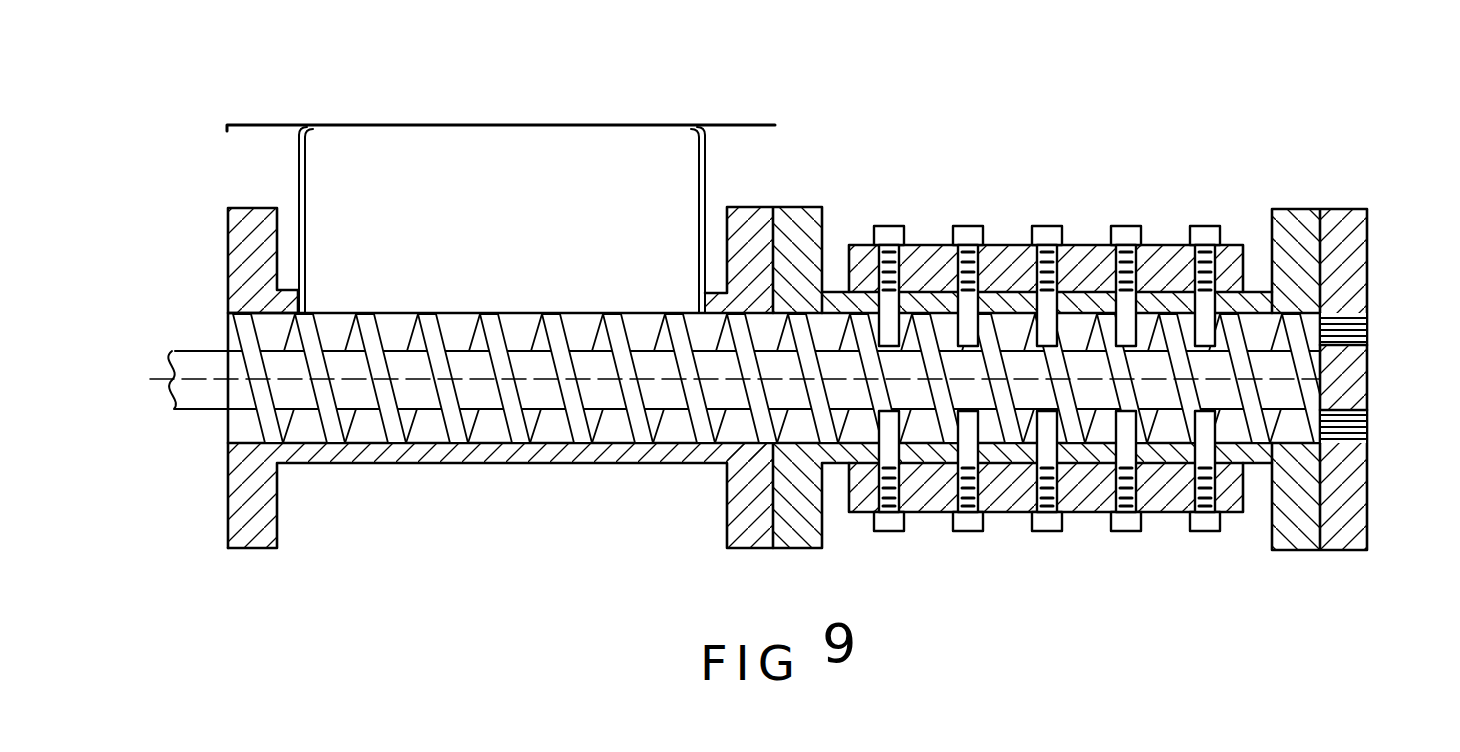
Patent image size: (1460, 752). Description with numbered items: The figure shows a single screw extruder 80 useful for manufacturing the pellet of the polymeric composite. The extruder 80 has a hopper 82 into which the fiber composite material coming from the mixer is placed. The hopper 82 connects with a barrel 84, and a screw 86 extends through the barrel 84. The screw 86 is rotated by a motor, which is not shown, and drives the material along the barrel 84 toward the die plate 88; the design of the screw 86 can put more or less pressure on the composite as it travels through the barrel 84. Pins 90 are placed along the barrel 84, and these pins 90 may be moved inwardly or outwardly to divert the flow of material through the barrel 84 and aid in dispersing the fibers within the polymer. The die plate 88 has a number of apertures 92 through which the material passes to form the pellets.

The extruder 80 is at (950, 144).
The hopper 82 is at (708, 163).
The barrel 84 is at (587, 463).
The screw 86 is at (567, 327).
The die plate 88 is at (1392, 170).
The pins 90 is at (1132, 227).
The apertures 92 is at (1370, 410).